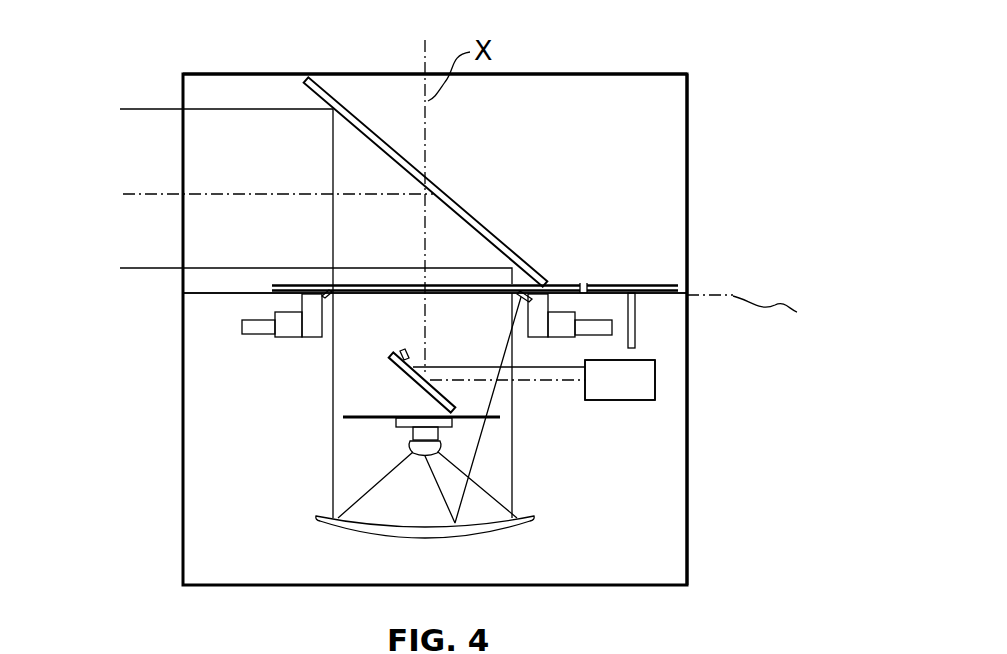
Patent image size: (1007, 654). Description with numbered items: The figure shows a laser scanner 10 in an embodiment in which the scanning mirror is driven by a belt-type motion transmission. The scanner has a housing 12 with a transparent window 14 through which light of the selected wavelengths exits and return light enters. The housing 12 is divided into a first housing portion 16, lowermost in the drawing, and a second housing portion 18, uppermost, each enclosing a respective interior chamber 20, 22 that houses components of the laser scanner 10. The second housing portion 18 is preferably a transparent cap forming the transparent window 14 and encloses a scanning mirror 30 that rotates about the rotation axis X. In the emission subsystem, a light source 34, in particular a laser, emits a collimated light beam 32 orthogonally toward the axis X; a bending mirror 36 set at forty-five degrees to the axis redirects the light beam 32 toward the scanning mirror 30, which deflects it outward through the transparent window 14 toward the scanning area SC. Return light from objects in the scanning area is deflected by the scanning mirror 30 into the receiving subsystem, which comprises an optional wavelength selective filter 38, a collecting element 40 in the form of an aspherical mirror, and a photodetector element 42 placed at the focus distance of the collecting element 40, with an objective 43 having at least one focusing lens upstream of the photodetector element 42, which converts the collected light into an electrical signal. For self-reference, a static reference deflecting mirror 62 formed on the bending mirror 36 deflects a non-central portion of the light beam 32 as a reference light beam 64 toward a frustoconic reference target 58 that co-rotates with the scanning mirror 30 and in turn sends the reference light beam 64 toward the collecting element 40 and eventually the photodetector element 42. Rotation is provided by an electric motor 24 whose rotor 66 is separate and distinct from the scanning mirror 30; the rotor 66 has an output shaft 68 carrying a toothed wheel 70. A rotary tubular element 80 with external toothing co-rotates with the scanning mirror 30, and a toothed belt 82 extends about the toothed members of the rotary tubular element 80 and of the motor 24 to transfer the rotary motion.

The laser scanner 10 is at (118, 82).
The housing 12 is at (711, 269).
The transparent window 14 is at (688, 148).
The first housing portion 16 is at (688, 497).
The second housing portion 18 is at (630, 71).
The interior chamber 20 is at (668, 564).
The interior chamber 22 is at (670, 117).
The electric motor 24 is at (669, 359).
The scanning mirror 30 is at (449, 182).
The light beam 32 is at (250, 192).
The light source 34 is at (622, 392).
The bending mirror 36 is at (395, 380).
The filter 38 is at (500, 420).
The collecting element 40 is at (318, 522).
The photodetector element 42 is at (412, 432).
The objective 43 is at (418, 458).
The reference target 58 is at (541, 282).
The static reference deflecting mirror 62 is at (405, 352).
The reference light beam 64 is at (410, 362).
The rotor 66 is at (669, 359).
The output shaft 68 is at (636, 340).
The toothed wheel 70 is at (648, 283).
The rotary tubular element 80 is at (313, 336).
The toothed belt 82 is at (583, 282).